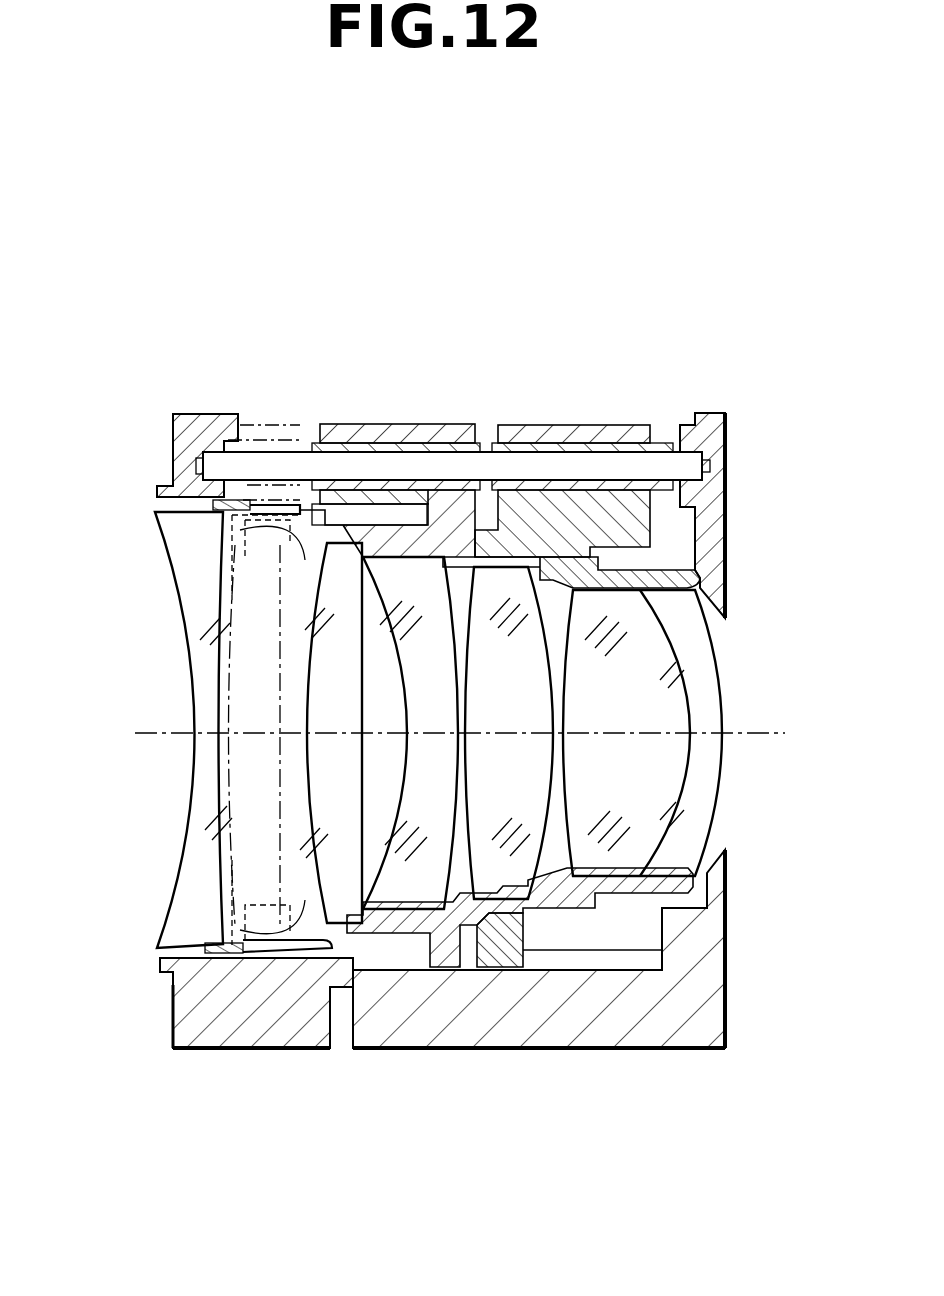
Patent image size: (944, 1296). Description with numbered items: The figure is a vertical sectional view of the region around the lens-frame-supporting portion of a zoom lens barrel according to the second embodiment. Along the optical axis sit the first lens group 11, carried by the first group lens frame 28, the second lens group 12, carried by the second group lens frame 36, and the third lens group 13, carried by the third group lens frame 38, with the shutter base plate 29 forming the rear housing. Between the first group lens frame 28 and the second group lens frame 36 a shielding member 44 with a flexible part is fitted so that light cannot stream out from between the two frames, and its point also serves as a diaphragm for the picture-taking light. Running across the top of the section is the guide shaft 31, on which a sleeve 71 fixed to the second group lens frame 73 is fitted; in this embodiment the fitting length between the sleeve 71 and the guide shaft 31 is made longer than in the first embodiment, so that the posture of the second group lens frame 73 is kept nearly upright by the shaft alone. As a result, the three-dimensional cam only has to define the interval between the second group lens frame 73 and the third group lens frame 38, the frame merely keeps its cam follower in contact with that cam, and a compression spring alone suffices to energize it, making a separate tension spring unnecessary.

The first lens group 11 is at (212, 662).
The second lens group 12 is at (483, 760).
The third lens group 13 is at (657, 758).
The first group lens frame 28 is at (198, 423).
The shutter base plate 29 is at (715, 447).
The guide shaft 31 is at (673, 467).
The second group lens frame 36 is at (405, 920).
The third group lens frame 38 is at (618, 432).
The shielding member 44 is at (300, 560).
The sleeve 71 is at (312, 440).
The second group lens frame 73 is at (448, 425).